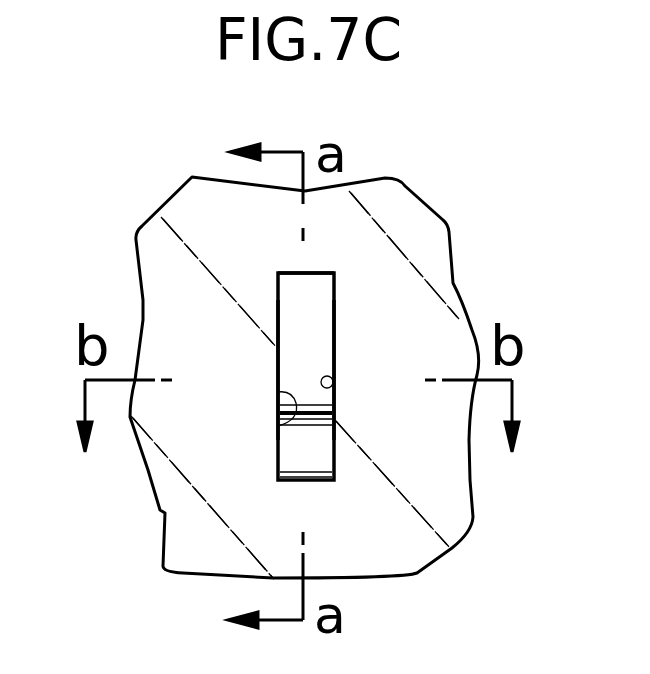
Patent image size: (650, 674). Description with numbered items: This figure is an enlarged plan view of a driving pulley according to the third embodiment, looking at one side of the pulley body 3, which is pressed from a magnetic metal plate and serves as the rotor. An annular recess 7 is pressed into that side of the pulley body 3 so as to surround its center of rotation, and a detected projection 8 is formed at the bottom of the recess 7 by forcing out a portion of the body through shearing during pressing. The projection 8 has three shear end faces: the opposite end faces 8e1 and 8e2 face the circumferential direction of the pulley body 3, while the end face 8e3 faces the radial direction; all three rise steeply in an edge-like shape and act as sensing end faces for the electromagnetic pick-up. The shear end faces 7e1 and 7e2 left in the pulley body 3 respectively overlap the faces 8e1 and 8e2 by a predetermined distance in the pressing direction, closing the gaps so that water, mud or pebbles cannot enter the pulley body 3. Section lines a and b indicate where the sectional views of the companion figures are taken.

The substrate 3 is at (160, 509).
The insulating film 7 is at (158, 241).
The groove 8 is at (275, 374).
The first side edge of groove 8e1 is at (335, 345).
The second side edge of groove 8e2 is at (277, 347).
The end edge of groove 8e3 is at (294, 272).
The edge portion of insulating film 7e1 is at (332, 385).
The edge portion of insulating film 7e2 is at (278, 427).